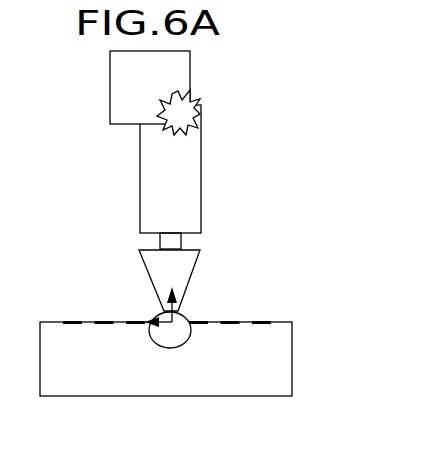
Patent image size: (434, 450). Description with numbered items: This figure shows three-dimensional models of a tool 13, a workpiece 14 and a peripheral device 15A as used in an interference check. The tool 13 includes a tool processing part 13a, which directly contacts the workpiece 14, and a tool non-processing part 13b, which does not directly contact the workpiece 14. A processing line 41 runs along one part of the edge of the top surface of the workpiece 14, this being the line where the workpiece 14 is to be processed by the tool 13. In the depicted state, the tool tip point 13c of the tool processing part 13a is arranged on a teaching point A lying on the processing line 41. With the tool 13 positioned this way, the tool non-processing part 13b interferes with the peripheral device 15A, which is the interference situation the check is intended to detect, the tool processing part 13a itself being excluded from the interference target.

The tool 13 is at (229, 172).
The tool processing part 13a is at (182, 271).
The tool non-processing part 13b is at (166, 161).
The tool tip point 13c is at (176, 361).
The workpiece 14 is at (277, 358).
The peripheral device 15A is at (175, 66).
The processing line 41 is at (72, 322).
The teaching point A is at (172, 338).